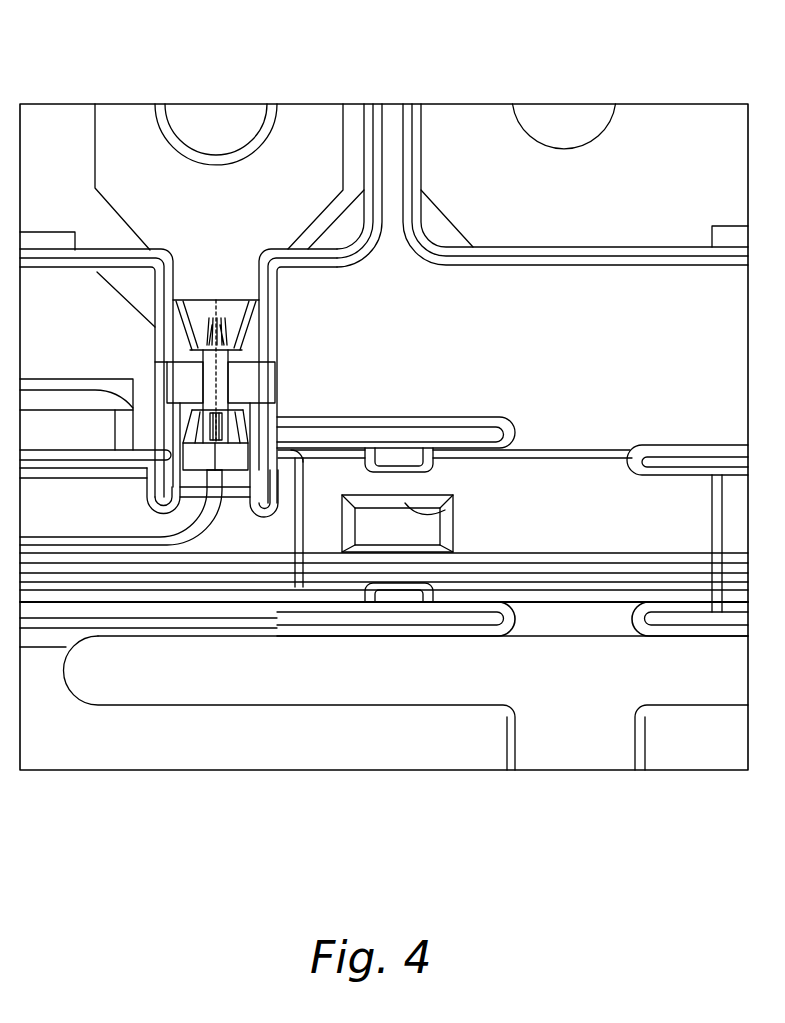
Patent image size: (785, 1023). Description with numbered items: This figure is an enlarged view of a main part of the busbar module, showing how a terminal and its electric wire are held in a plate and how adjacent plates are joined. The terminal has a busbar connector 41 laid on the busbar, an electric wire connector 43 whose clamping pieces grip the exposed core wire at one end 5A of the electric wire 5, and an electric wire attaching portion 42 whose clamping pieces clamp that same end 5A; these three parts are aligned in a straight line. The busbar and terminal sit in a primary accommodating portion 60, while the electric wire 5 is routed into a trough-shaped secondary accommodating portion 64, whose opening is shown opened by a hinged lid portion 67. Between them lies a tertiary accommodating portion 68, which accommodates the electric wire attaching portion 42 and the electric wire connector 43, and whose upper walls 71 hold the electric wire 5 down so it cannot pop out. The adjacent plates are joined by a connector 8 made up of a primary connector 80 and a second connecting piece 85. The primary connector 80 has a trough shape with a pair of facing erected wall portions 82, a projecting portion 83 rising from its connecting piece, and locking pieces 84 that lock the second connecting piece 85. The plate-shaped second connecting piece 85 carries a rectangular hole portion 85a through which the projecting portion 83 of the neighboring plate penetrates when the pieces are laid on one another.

The busbar connector 41 is at (300, 133).
The primary accommodating portion 60 is at (366, 262).
The tertiary accommodating portion 68 is at (282, 341).
The electric wire connector 43 is at (203, 358).
The upper wall 71 is at (185, 382).
The electric wire attaching portion 42 is at (200, 455).
The electric wire 5 is at (121, 507).
The one end of the electric wire 5A is at (215, 472).
The second connecting piece 85 is at (328, 478).
The connector 8 is at (422, 514).
The primary connector 80 is at (402, 514).
The erected wall portion 82 is at (457, 432).
The locking piece 84 is at (388, 460).
The secondary accommodating portion 64 is at (677, 443).
The projecting portion 83 is at (449, 520).
The hole portion 85a is at (443, 507).
The lid portion 67 is at (368, 750).